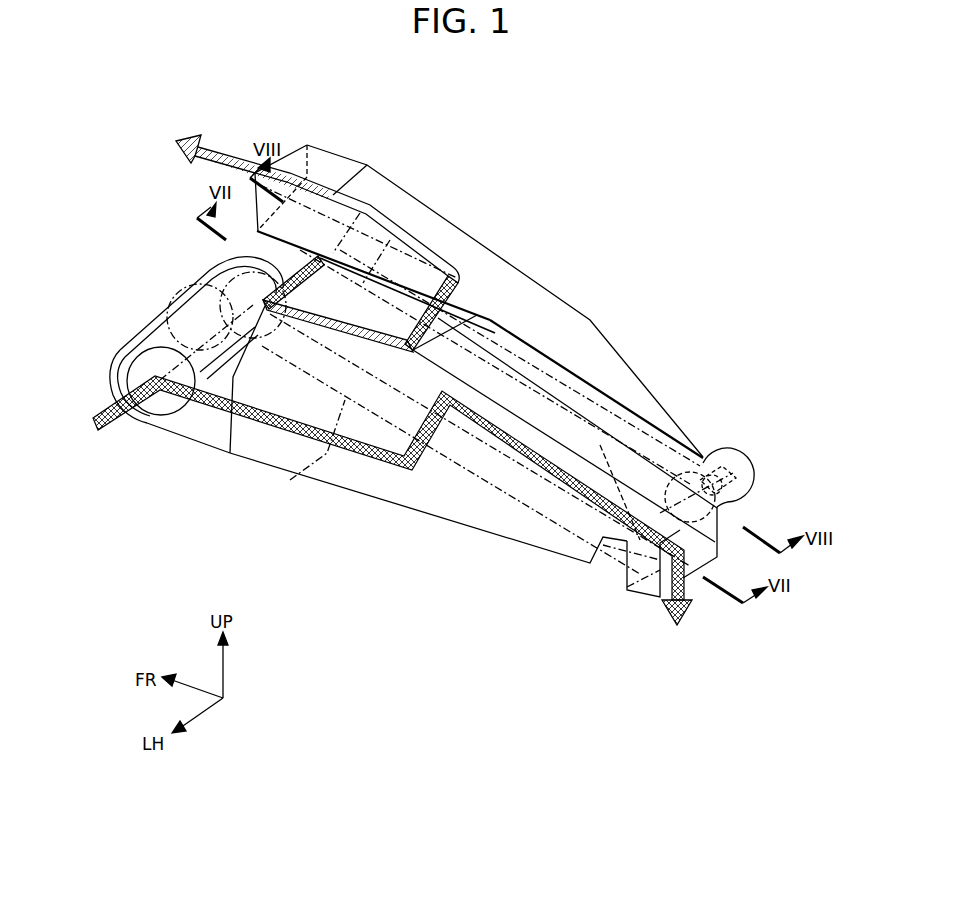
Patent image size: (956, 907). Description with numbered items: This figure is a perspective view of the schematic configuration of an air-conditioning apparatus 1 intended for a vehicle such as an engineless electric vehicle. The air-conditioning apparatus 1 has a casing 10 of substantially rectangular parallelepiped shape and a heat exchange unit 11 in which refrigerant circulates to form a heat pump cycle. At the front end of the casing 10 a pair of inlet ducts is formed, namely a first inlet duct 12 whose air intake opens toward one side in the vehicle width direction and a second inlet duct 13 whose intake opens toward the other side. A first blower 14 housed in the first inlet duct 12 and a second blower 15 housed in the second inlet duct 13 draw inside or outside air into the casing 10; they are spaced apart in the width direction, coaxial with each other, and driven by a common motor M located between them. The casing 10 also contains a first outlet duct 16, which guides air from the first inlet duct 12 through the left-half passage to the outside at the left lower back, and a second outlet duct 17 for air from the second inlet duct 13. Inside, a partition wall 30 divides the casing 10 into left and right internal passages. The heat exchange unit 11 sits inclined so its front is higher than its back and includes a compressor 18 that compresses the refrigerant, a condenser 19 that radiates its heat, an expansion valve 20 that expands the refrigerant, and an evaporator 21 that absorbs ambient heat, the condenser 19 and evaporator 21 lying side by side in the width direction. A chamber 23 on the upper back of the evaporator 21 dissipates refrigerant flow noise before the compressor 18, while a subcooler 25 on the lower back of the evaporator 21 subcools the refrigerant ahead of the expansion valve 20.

The air-conditioning apparatus 1 is at (510, 199).
The casing 10 is at (593, 336).
The heat exchange unit 11 is at (630, 410).
The first inlet duct 12 is at (120, 362).
The second inlet duct 13 is at (260, 257).
The first blower 14 is at (190, 340).
The second blower 15 is at (205, 272).
The first outlet duct 16 is at (643, 590).
The second outlet duct 17 is at (323, 158).
The compressor 18 is at (743, 470).
The condenser 19 is at (493, 480).
The expansion valve 20 is at (707, 467).
The evaporator 21 is at (633, 405).
The chamber 23 is at (730, 490).
The subcooler 25 is at (717, 520).
The partition wall 30 is at (345, 400).
The motor M is at (195, 300).